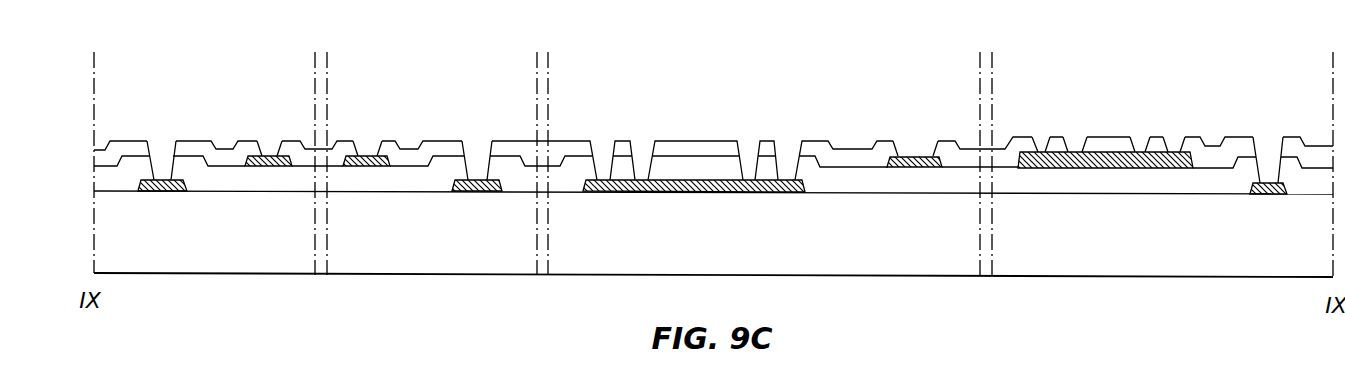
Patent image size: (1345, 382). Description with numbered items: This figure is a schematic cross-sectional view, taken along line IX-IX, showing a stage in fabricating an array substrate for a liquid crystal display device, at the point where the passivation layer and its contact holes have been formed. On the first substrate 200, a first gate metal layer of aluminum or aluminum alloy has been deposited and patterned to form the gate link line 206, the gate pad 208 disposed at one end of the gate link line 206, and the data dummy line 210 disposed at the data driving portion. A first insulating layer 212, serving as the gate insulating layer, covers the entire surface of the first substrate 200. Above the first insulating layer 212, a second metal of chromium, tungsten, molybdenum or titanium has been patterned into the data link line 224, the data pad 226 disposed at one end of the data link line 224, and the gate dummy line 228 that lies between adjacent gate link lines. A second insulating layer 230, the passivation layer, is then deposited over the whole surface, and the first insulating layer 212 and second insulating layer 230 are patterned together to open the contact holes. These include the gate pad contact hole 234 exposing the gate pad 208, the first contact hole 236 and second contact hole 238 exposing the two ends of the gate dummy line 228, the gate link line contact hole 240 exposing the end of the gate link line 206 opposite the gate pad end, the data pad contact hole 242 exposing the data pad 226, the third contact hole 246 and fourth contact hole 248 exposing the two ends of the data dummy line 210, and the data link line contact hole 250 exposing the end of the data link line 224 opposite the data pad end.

The first substrate 200 is at (733, 262).
The gate link line 206 is at (477, 192).
The gate pad 208 is at (600, 193).
The data dummy line 210 is at (160, 192).
The first insulating layer 212 is at (192, 155).
The data link line 224 is at (270, 167).
The data pad 226 is at (1040, 168).
The gate dummy line 228 is at (363, 167).
The second insulating layer 230 is at (310, 147).
The gate pad contact hole 234 is at (602, 147).
The first contact hole 236 is at (923, 145).
The second contact hole 238 is at (367, 143).
The gate link line contact hole 240 is at (478, 148).
The data pad contact hole 242 is at (1040, 137).
The third contact hole 246 is at (1272, 148).
The fourth contact hole 248 is at (162, 150).
The data link line contact hole 250 is at (268, 145).